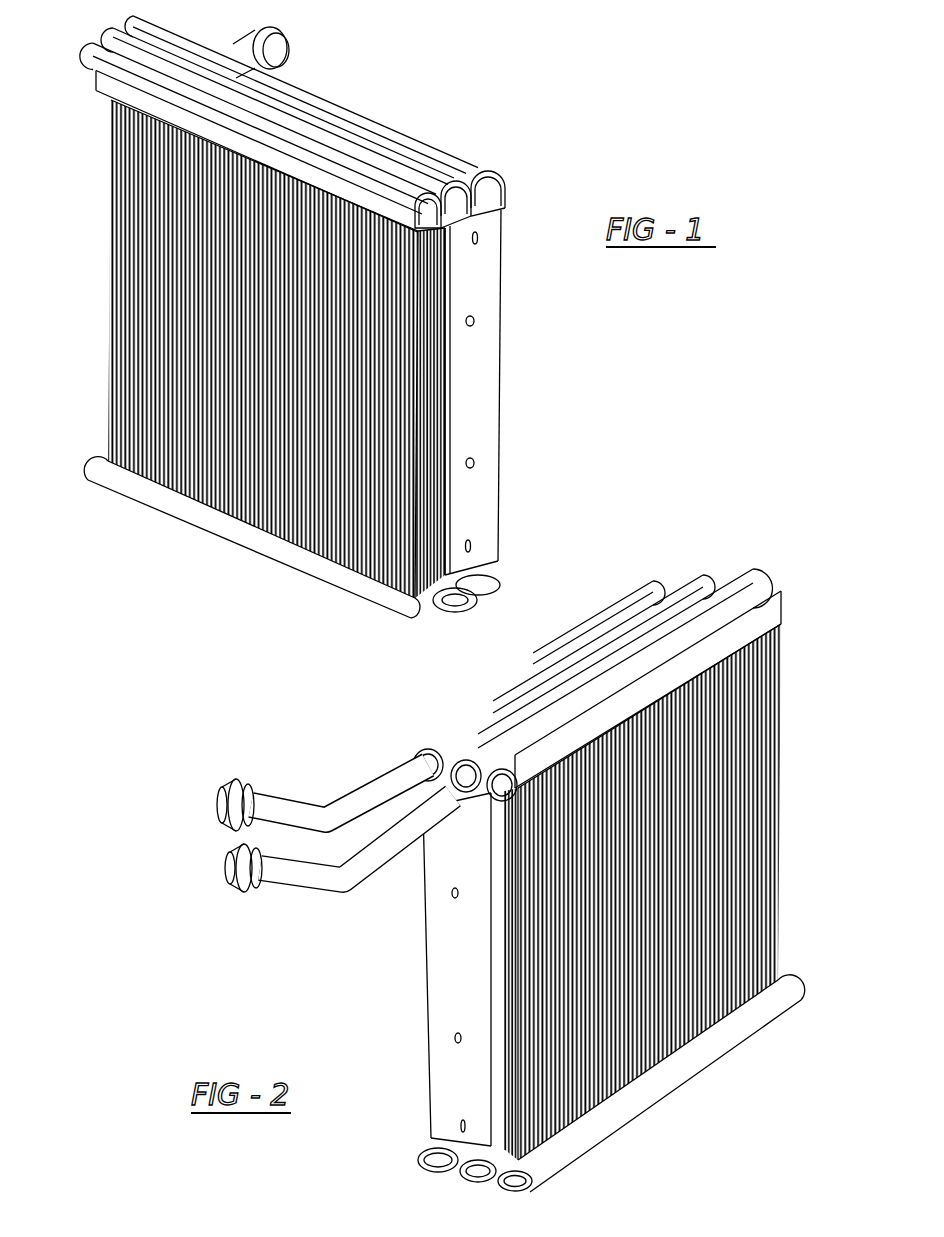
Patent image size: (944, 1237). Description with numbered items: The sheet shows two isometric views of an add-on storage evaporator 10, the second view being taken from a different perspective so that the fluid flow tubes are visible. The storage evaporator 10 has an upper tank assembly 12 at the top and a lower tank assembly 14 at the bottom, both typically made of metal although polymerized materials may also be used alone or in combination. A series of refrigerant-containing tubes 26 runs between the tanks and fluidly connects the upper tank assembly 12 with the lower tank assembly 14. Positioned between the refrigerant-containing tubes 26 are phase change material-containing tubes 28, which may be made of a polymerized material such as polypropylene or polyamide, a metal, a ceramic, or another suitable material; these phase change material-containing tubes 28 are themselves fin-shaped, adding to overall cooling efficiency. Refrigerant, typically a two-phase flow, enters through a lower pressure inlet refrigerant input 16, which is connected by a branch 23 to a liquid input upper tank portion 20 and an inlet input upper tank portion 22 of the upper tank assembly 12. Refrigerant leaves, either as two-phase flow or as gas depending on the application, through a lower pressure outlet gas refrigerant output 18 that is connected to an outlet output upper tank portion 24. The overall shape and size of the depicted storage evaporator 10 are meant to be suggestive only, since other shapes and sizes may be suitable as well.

In FIG. 1, the storage evaporator 10 is at (388, 64).
In FIG. 2, the storage evaporator 10 is at (800, 774).
In FIG. 1, the upper tank assembly 12 is at (497, 182).
In FIG. 2, the upper tank assembly 12 is at (622, 594).
In FIG. 1, the lower tank assembly 14 is at (226, 524).
In FIG. 2, the lower tank assembly 14 is at (680, 1062).
In FIG. 2, the inlet refrigerant input 16 is at (290, 860).
In FIG. 1, the outlet gas refrigerant output 18 is at (252, 50).
In FIG. 2, the outlet gas refrigerant output 18 is at (268, 800).
In FIG. 1, the liquid input upper tank portion 20 is at (148, 40).
In FIG. 2, the liquid input upper tank portion 20 is at (712, 578).
In FIG. 1, the inlet input upper tank portion 22 is at (130, 76).
In FIG. 2, the inlet input upper tank portion 22 is at (773, 580).
In FIG. 2, the branch 23 is at (428, 780).
In FIG. 1, the outlet output upper tank portion 24 is at (400, 122).
In FIG. 2, the outlet output upper tank portion 24 is at (668, 572).
In FIG. 1, the refrigerant-containing tubes 26 is at (148, 268).
In FIG. 2, the refrigerant-containing tubes 26 is at (722, 830).
In FIG. 1, the phase change material-containing tubes 28 is at (172, 326).
In FIG. 2, the phase change material-containing tubes 28 is at (700, 878).